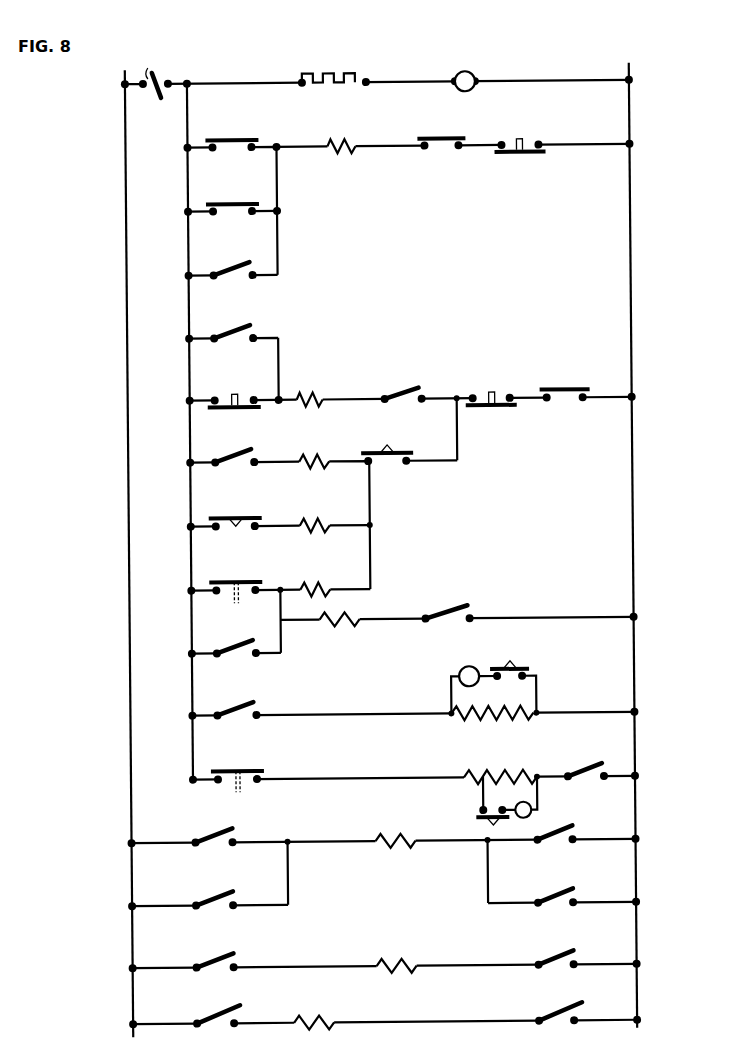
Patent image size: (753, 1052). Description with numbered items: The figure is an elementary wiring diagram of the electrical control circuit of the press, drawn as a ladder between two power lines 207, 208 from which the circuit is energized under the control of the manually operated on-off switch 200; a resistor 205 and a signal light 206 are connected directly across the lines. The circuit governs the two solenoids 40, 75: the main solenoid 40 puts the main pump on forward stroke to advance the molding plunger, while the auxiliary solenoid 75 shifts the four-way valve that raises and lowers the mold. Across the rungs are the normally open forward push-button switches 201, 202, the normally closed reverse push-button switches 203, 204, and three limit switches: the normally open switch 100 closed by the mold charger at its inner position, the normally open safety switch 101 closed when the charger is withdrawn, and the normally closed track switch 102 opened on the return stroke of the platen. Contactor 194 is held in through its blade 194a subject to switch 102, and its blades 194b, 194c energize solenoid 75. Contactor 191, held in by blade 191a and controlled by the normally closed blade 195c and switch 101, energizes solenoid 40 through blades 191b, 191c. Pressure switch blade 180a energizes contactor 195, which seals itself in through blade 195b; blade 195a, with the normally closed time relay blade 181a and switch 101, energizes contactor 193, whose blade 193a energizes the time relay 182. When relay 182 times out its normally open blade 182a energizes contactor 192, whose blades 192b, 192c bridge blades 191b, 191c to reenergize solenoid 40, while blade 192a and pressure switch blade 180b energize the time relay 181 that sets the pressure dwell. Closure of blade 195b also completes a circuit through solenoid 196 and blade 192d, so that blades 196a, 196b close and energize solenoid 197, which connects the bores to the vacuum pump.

The on-off switch 200 is at (153, 78).
The power line 207 is at (129, 121).
The power line 208 is at (635, 125).
The resistor 205 is at (338, 79).
The signal light 206 is at (467, 72).
The forward push-button switch 201 is at (236, 139).
The contactor 194 is at (344, 142).
The limit switch 102 is at (444, 138).
The reverse push-button switch 203 is at (528, 147).
The limit switch 100 is at (229, 203).
The switch blade 194a is at (233, 268).
The switch blade 191a is at (233, 331).
The forward push-button switch 202 is at (244, 403).
The contactor 191 is at (312, 399).
The switch blade 195c is at (406, 394).
The reverse push-button switch 204 is at (500, 400).
The limit switch 101 is at (566, 381).
The switch blade 195a is at (233, 455).
The contactor 193 is at (314, 460).
The switch blade 181a is at (398, 452).
The switch blade 182a is at (238, 517).
The contactor 192 is at (316, 523).
The switch blade 180a is at (237, 581).
The contactor 195 is at (316, 587).
The solenoid 196 is at (340, 616).
The switch blade 192d is at (449, 611).
The switch blade 195b is at (233, 645).
The switch blade 193a is at (233, 707).
The time relay 182 is at (476, 712).
The switch blade 180b is at (236, 770).
The time relay 181 is at (520, 773).
The switch blade 192a is at (582, 766).
The switch blade 191b is at (212, 833).
The solenoid 40 is at (396, 838).
The switch blade 191c is at (566, 833).
The switch blade 192b is at (212, 896).
The switch blade 192c is at (566, 896).
The switch blade 194b is at (212, 959).
The solenoid 75 is at (396, 962).
The switch blade 194c is at (566, 958).
The switch blade 196a is at (210, 1016).
The solenoid 197 is at (308, 1019).
The switch blade 196b is at (544, 1014).